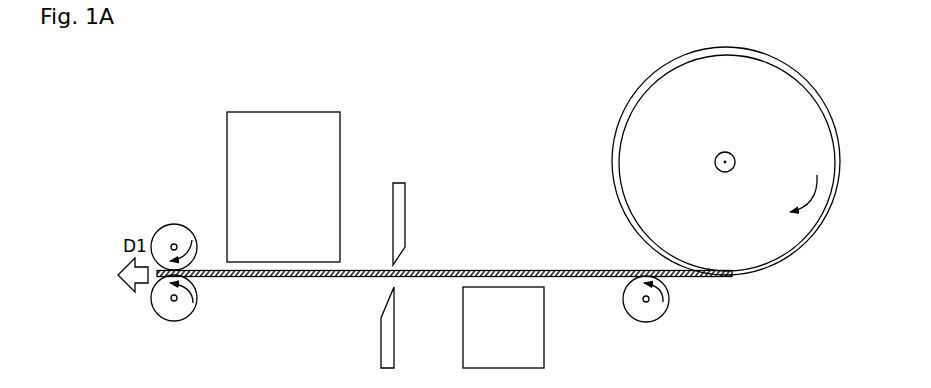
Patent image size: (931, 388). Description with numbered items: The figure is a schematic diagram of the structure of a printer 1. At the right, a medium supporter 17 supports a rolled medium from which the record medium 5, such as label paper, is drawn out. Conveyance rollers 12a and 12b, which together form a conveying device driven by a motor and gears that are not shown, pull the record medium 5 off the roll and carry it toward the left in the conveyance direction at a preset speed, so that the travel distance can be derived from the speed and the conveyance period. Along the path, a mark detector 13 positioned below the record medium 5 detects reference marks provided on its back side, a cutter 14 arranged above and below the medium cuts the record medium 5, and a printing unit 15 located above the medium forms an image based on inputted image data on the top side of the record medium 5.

The printer 1 is at (481, 78).
The record medium 5 is at (600, 278).
The conveyance roller 12a is at (645, 322).
The conveyance roller 12b is at (175, 321).
The mark detector 13 is at (463, 330).
The cutter 14 is at (383, 318).
The printing unit 15 is at (278, 112).
The medium supporter 17 is at (740, 157).